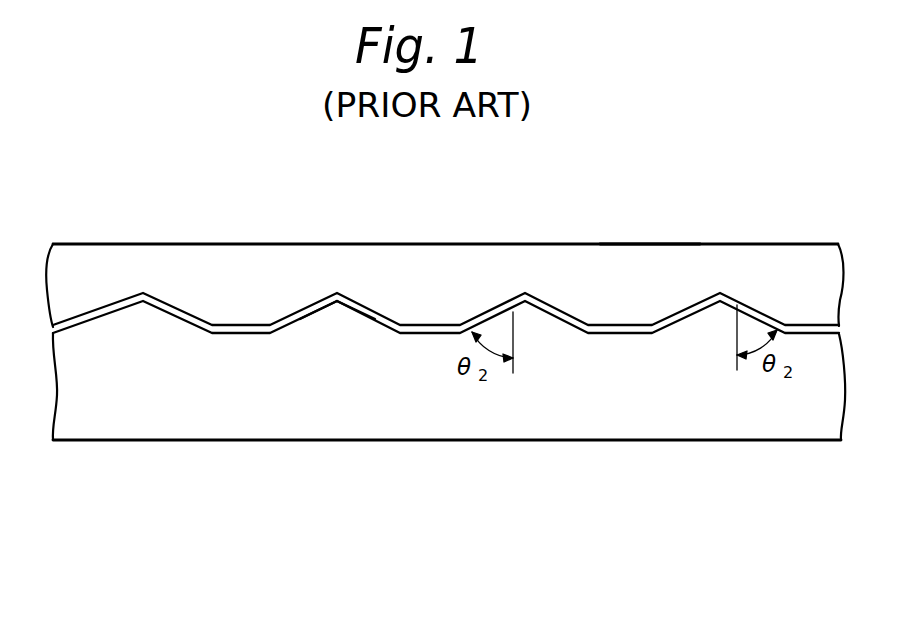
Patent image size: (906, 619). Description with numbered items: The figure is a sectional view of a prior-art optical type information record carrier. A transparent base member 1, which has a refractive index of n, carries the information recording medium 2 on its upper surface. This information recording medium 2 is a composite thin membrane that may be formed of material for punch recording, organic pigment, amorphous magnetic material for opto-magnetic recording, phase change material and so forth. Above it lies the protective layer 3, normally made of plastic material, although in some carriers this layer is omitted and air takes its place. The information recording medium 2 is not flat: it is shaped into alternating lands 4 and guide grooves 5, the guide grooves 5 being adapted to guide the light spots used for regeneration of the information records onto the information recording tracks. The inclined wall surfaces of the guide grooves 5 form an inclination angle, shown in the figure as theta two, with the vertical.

The transparent base member 1 is at (501, 425).
The information recording medium 2 is at (299, 325).
The protective layer 3 is at (655, 262).
The lands 4 is at (243, 336).
The guide grooves 5 is at (337, 304).